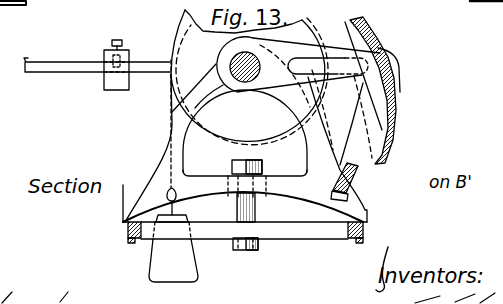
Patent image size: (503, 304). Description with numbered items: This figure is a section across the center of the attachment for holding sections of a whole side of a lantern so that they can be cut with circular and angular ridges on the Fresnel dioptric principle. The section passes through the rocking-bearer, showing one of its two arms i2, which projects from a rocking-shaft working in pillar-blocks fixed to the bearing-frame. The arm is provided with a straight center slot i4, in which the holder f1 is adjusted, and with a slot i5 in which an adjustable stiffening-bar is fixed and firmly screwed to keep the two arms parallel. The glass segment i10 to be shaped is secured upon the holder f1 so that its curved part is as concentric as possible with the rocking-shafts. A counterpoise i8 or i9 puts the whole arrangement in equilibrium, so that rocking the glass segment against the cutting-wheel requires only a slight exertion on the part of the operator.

The counterpoise i9 is at (97, 73).
The straight center slot i4 is at (323, 61).
The arm i2 is at (317, 76).
The glass segment i10 is at (382, 90).
The slot i5 is at (342, 117).
The counterpoise i8 is at (173, 180).
The holder f1 is at (348, 182).